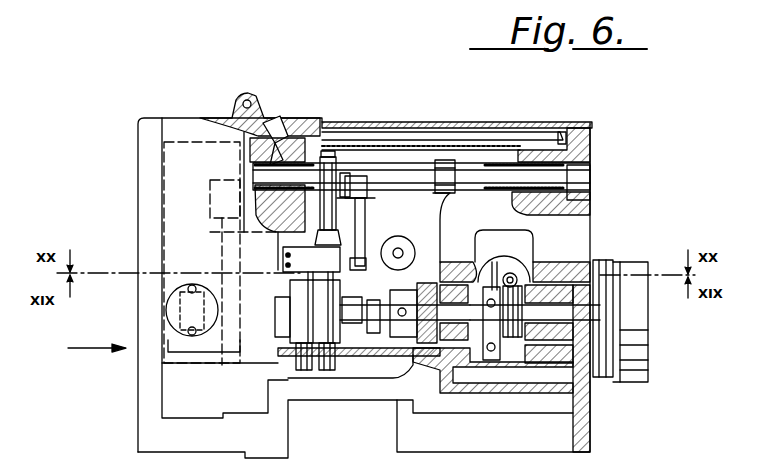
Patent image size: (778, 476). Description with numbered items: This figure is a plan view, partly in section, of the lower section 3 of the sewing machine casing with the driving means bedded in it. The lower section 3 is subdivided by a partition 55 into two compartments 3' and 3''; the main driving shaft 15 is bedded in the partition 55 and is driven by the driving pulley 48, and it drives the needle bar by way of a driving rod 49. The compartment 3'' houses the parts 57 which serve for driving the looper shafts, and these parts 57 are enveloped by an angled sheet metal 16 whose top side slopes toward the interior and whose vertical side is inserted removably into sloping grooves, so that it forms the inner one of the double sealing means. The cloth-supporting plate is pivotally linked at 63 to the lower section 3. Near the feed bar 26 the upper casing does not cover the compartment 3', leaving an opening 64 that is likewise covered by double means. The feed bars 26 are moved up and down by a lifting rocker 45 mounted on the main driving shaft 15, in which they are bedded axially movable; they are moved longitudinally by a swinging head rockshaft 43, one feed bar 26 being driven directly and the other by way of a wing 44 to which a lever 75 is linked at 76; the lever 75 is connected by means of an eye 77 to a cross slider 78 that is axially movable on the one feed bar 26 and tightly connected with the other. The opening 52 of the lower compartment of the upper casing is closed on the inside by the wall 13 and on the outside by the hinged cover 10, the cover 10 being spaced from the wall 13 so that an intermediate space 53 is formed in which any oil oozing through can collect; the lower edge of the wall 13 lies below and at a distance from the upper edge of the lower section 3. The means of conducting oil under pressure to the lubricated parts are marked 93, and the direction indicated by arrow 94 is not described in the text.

The lower section of the casing 3 is at (606, 204).
The compartment 3' is at (421, 135).
The compartment 3'' is at (151, 219).
The cover 10 is at (455, 124).
The wall 13 is at (483, 136).
The main driving shaft 15 is at (553, 330).
The angled sheet metal 16 is at (198, 170).
The feed bar 26 is at (300, 370).
The swinging head rockshaft 43 is at (561, 132).
The wing 44 is at (375, 172).
The lifting rocker 45 is at (330, 332).
The driving pulley 48 is at (650, 272).
The driving rod 49 is at (500, 343).
The opening 52 is at (507, 144).
The intermediate space 53 is at (591, 126).
The partition 55 is at (257, 240).
The parts 57 is at (190, 310).
The pivot 63 is at (245, 97).
The opening 64 is at (288, 362).
The lever 75 is at (366, 224).
The link point 76 is at (358, 180).
The eye 77 is at (362, 270).
The cross slider 78 is at (290, 262).
The means of conducting oil under pressure 93 is at (512, 268).
The direction arrow 94 is at (97, 340).